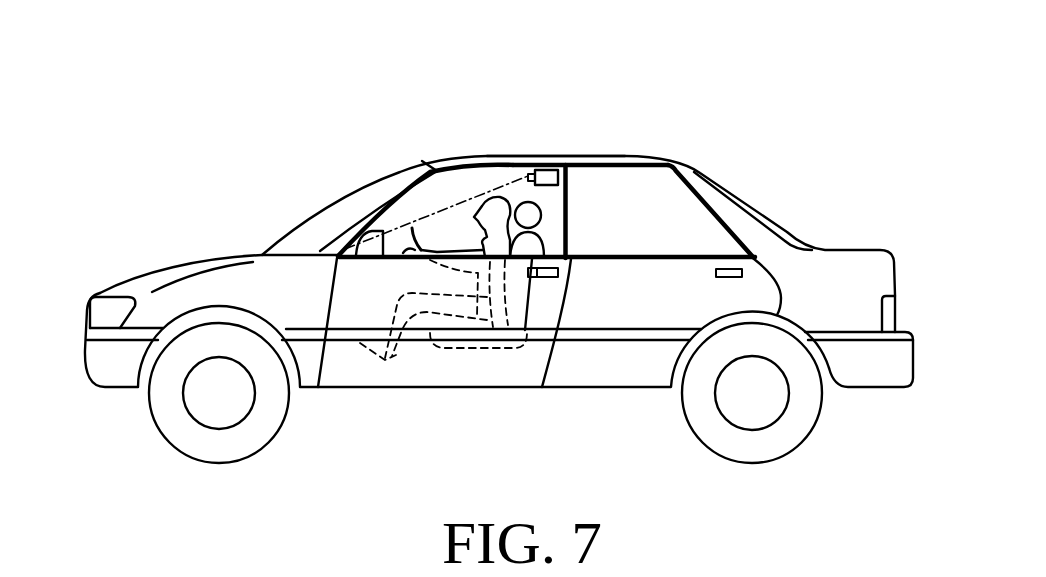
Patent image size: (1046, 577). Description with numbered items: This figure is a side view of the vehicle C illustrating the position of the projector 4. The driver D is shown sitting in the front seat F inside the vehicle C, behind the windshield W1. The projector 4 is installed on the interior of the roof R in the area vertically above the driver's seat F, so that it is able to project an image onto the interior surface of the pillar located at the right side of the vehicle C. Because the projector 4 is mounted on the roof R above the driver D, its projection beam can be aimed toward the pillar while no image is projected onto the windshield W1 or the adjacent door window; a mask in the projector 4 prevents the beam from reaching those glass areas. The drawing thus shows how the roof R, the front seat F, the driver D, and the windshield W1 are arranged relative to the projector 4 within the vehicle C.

The vehicle C is at (163, 268).
The windshield W1 is at (328, 225).
The driver D is at (493, 207).
The projector 4 is at (547, 168).
The roof R is at (623, 156).
The front seat F is at (544, 222).